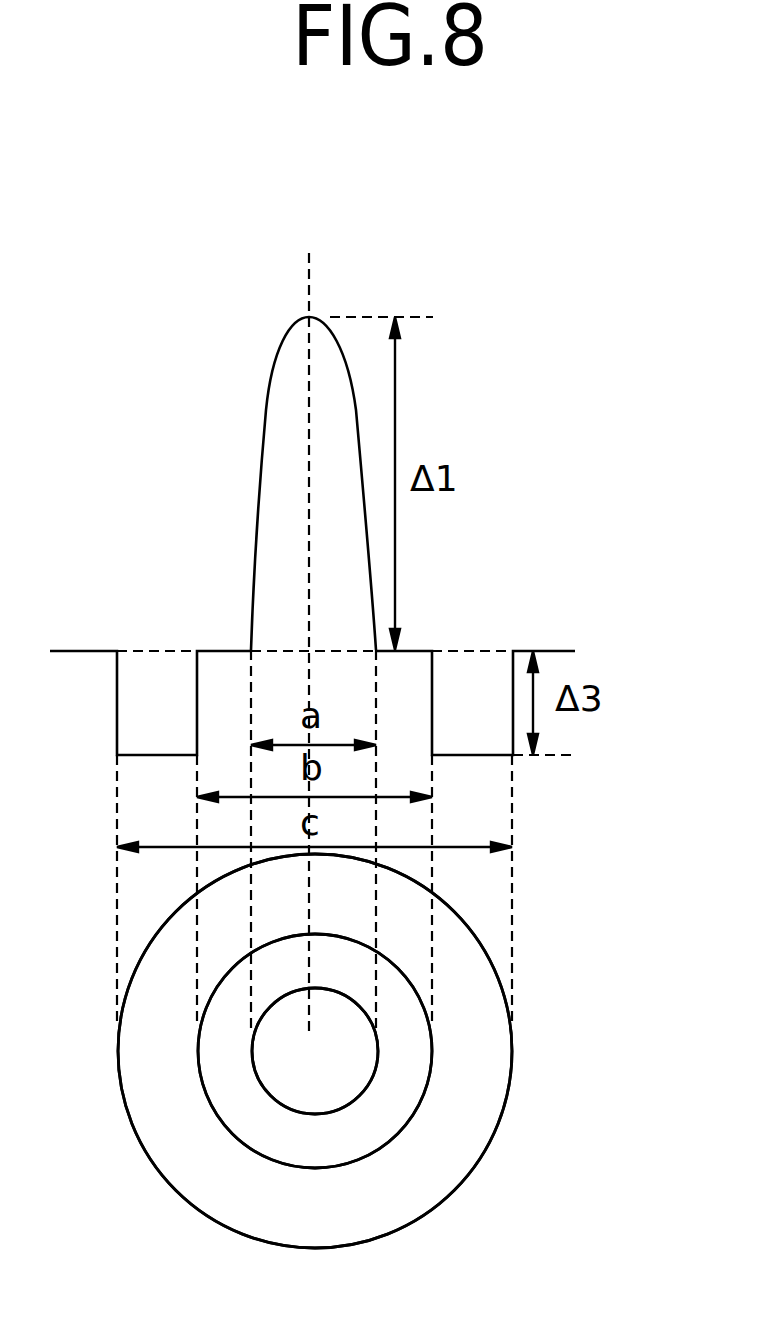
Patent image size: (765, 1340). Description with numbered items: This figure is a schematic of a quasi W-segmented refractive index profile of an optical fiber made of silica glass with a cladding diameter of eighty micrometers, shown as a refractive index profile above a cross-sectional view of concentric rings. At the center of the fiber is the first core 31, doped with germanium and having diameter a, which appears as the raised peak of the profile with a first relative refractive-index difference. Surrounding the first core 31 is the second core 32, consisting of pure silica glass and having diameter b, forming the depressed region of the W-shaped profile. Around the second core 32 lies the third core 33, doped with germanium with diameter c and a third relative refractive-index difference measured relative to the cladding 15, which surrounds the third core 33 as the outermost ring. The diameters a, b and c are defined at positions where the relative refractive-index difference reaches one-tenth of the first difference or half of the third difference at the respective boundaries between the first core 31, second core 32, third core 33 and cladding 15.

The cladding 15 is at (515, 1052).
The first core 31 is at (315, 1087).
The second core 32 is at (397, 1100).
The third core 33 is at (488, 1085).